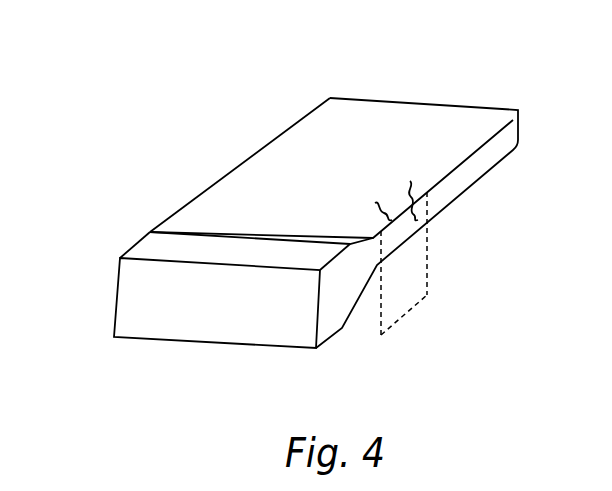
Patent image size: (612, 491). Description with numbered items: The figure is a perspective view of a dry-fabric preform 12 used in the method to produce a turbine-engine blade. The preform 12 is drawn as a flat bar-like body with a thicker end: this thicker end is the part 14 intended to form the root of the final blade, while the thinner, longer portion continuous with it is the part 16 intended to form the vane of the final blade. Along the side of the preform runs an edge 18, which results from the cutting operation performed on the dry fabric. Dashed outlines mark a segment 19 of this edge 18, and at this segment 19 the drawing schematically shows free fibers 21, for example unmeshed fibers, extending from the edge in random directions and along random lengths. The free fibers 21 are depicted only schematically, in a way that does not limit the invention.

The preform 12 is at (468, 82).
The part intended to form a root 14 is at (158, 247).
The part intended to form a vane 16 is at (320, 133).
The edge 18 is at (450, 188).
The segment 19 is at (381, 335).
The free fibers 21 is at (403, 197).